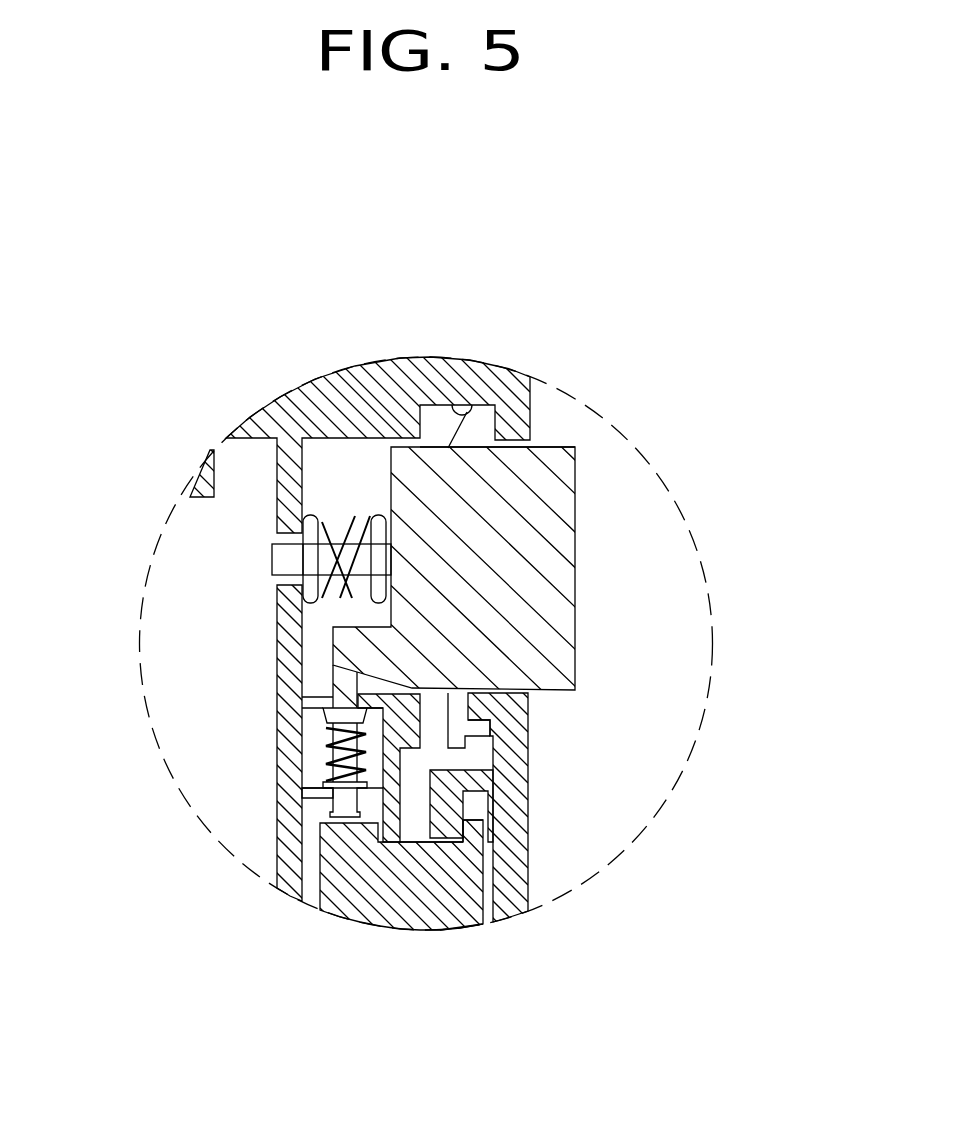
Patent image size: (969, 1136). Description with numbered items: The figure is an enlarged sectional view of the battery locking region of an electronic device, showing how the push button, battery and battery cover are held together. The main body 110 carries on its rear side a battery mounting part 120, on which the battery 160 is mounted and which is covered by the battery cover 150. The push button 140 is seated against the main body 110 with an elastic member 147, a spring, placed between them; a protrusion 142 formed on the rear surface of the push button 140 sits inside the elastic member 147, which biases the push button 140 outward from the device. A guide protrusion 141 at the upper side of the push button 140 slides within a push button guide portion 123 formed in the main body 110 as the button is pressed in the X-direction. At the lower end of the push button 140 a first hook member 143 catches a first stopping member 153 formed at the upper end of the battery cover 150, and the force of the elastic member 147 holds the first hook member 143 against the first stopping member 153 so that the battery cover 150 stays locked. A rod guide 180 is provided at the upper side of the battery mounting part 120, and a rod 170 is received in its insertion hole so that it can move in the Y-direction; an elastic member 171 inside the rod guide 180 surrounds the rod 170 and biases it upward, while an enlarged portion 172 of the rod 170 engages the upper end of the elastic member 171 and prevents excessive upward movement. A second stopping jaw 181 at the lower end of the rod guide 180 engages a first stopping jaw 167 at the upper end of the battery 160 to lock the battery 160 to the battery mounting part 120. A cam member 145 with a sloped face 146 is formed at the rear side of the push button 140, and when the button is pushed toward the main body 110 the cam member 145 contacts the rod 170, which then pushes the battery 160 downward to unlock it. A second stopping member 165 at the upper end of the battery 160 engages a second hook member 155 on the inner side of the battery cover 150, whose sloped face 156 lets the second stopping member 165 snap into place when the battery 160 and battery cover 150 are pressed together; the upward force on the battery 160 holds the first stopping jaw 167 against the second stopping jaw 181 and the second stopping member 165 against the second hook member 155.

The main body 110 is at (400, 382).
The battery mounting part 120 is at (310, 905).
The push button guide portion 123 is at (450, 403).
The push button 140 is at (552, 541).
The guide protrusion 141 is at (480, 443).
The protrusion 142 is at (285, 560).
The first hook member 143 is at (470, 737).
The cam member 145 is at (353, 643).
The sloped face 146 is at (378, 693).
The elastic member 147 is at (362, 520).
The battery cover 150 is at (530, 905).
The first stopping member 153 is at (487, 703).
The second hook member 155 is at (448, 804).
The sloped face 156 is at (478, 915).
The battery 160 is at (400, 850).
The second stopping member 165 is at (432, 840).
The first stopping jaw 167 is at (325, 845).
The rod 170 is at (280, 812).
The elastic member 171 is at (280, 742).
The enlarged portion 172 is at (280, 715).
The rod guide 180 is at (412, 687).
The second stopping jaw 181 is at (432, 850).